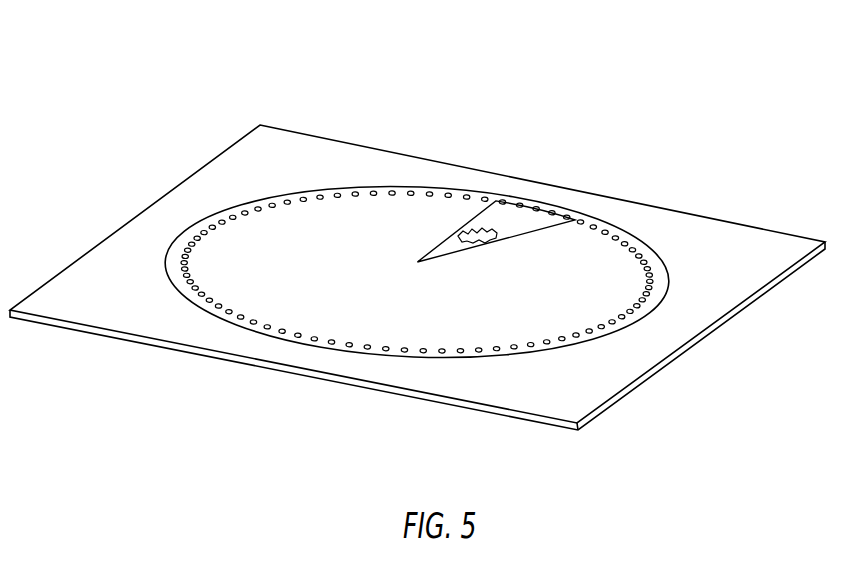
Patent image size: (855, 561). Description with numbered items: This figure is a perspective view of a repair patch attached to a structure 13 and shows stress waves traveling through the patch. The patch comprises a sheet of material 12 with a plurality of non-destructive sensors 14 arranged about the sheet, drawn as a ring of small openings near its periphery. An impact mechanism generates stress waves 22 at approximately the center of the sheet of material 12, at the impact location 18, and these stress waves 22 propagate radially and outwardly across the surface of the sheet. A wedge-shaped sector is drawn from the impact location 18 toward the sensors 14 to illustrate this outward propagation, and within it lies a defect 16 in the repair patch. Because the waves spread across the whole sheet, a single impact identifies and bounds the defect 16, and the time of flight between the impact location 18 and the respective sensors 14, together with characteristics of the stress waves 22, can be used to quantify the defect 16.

The structure 13 is at (147, 205).
The sheet of material 12 is at (414, 208).
The non-destructive sensors 14 is at (330, 193).
The impact location 18 is at (418, 280).
The defect 16 is at (487, 222).
The stress waves 22 is at (525, 221).